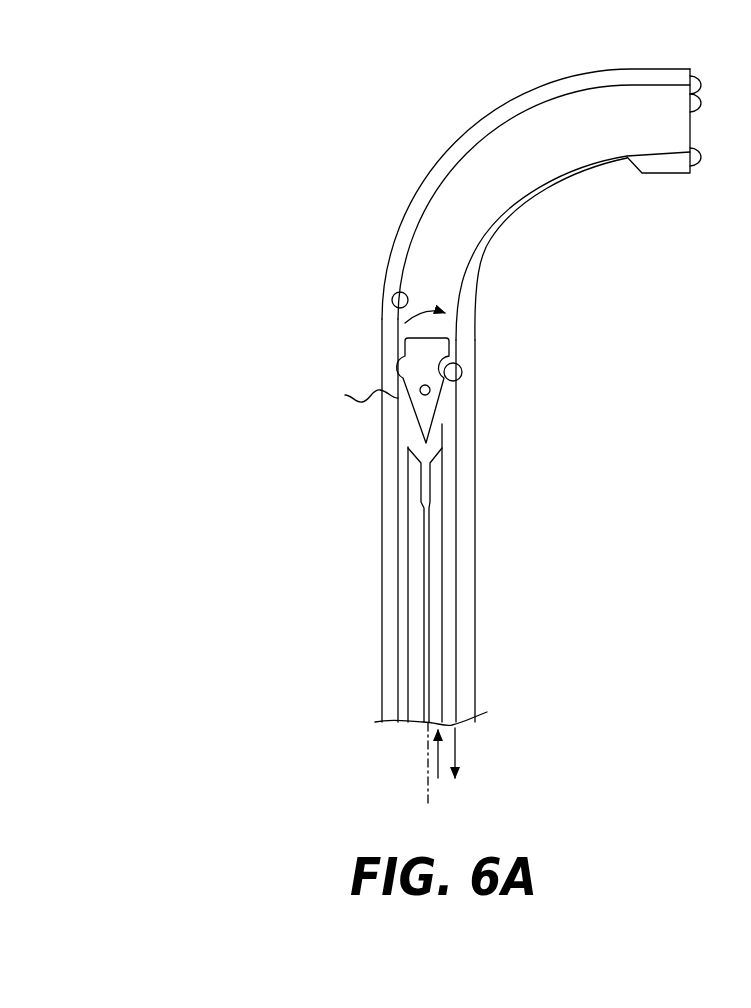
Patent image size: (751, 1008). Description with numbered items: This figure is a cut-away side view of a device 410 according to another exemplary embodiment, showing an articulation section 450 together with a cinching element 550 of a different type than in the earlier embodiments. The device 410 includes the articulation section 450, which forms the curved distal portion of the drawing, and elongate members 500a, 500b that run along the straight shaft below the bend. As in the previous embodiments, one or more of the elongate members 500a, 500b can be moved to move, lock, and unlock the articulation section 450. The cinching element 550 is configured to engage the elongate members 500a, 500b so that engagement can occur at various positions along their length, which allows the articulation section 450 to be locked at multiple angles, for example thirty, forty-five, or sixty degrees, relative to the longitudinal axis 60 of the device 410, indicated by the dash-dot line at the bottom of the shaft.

The articulation section 450 is at (408, 122).
The device 410 is at (257, 285).
The cinching element 550 is at (360, 317).
The elongate member 500b is at (369, 530).
The elongate member 500a is at (457, 397).
The longitudinal axis 60 is at (427, 770).